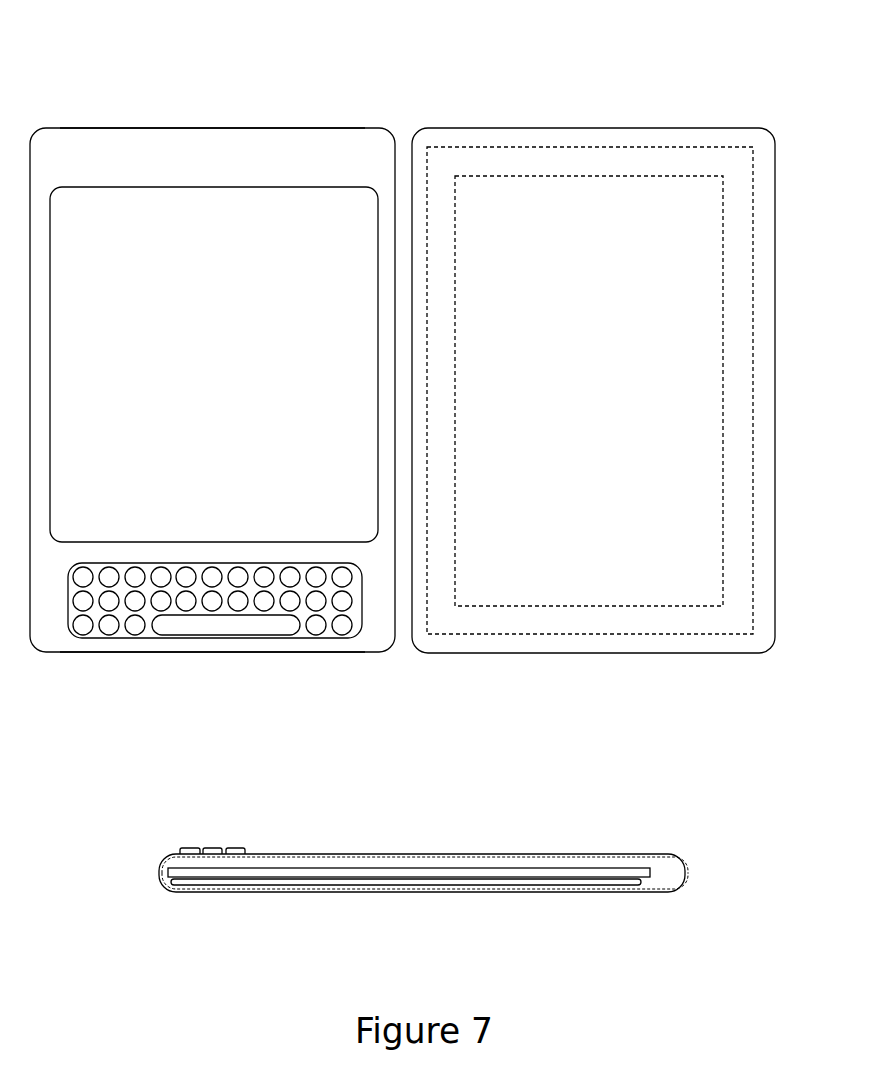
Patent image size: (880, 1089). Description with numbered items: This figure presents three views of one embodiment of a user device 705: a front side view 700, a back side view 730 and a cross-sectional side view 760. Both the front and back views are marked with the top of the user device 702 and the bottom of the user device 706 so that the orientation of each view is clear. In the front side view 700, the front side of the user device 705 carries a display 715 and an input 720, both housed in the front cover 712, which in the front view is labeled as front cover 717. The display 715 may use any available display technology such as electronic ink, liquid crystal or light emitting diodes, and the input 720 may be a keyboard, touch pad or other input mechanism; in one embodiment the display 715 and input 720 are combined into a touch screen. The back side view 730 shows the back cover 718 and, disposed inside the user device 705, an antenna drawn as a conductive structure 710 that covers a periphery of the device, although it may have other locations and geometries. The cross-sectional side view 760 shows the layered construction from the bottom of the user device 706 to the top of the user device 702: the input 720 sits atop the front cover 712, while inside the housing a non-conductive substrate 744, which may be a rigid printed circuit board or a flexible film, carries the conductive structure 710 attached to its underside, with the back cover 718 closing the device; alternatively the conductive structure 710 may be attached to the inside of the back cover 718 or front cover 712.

The front side view 700 is at (255, 62).
The top of user device 702 is at (414, 499).
The user device 705 is at (320, 827).
The bottom of user device 706 is at (370, 771).
The conductive structure 710 is at (670, 168).
The front cover 712 is at (545, 856).
The display 715 is at (247, 370).
The front cover 717 is at (370, 653).
The back cover 718 is at (753, 655).
The input 720 is at (85, 638).
The back side view 730 is at (631, 60).
The non-conductive substrate 744 is at (533, 880).
The cross-sectional side view 760 is at (497, 780).